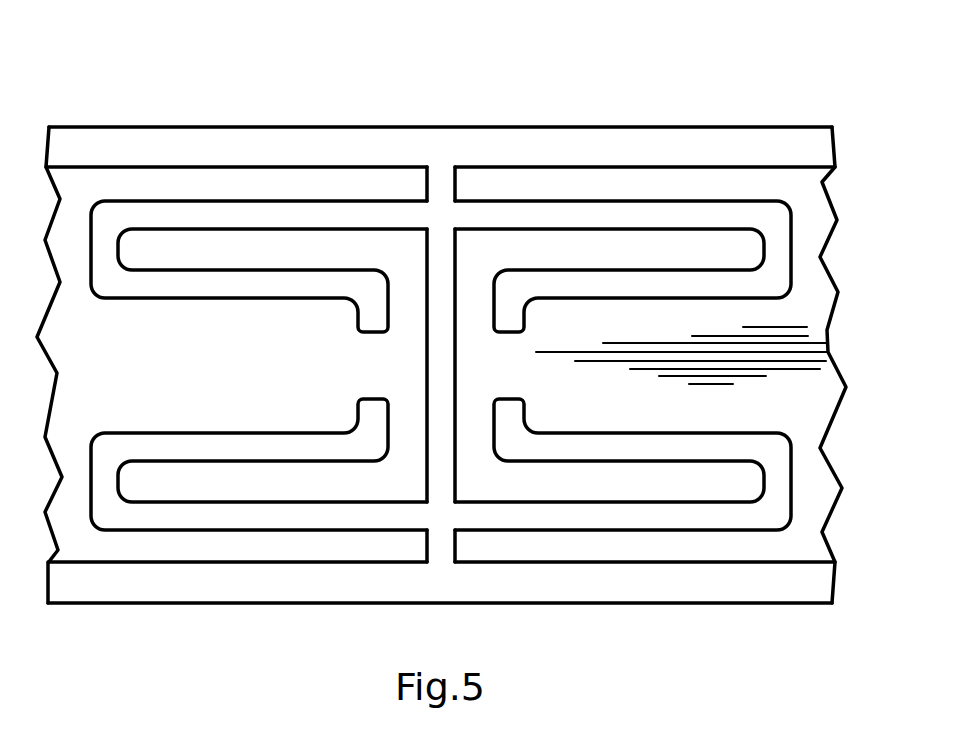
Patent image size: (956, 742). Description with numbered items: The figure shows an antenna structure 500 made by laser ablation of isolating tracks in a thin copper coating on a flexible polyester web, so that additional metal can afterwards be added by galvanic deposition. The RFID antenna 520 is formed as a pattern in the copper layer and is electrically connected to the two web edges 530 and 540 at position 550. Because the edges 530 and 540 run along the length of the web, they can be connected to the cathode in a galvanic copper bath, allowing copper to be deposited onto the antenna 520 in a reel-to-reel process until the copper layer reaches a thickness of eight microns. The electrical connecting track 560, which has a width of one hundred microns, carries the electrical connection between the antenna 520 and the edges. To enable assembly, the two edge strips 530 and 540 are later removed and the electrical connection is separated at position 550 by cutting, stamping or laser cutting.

The antenna structure 500 is at (699, 94).
The RFID antenna 520 is at (133, 433).
The web edge 530 is at (602, 138).
The web edge 540 is at (247, 590).
The position 550 is at (442, 590).
The electrical connecting track 560 is at (457, 243).